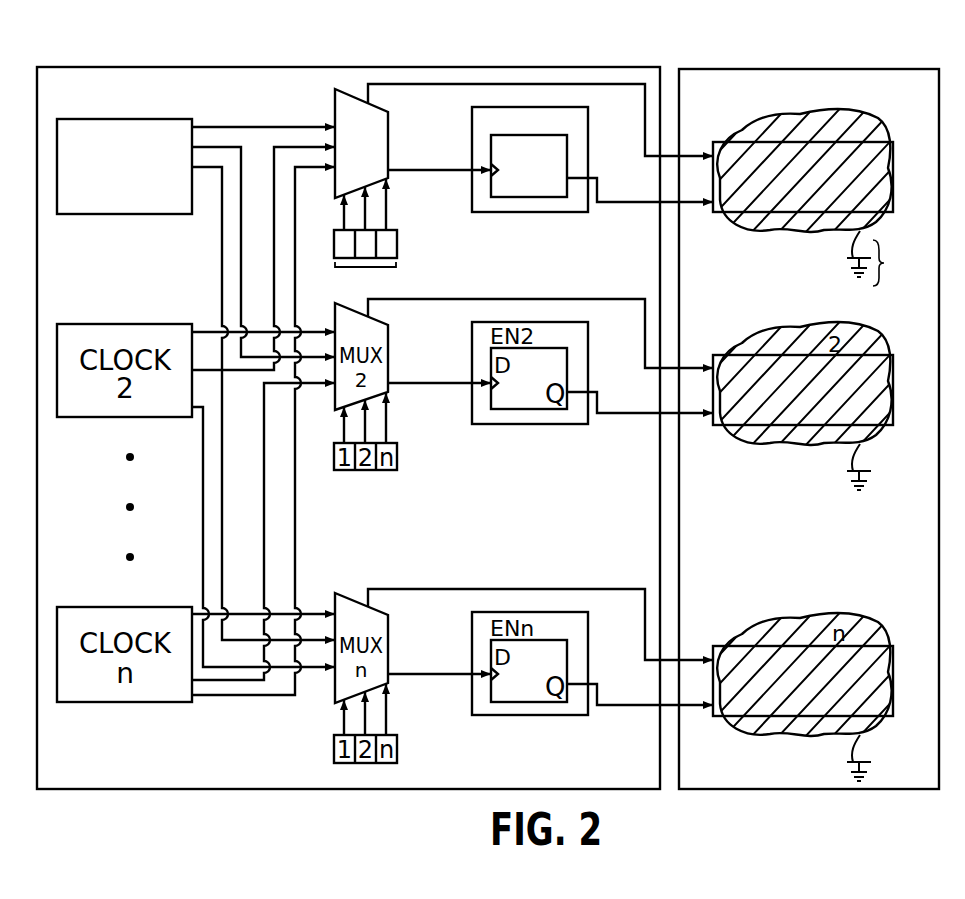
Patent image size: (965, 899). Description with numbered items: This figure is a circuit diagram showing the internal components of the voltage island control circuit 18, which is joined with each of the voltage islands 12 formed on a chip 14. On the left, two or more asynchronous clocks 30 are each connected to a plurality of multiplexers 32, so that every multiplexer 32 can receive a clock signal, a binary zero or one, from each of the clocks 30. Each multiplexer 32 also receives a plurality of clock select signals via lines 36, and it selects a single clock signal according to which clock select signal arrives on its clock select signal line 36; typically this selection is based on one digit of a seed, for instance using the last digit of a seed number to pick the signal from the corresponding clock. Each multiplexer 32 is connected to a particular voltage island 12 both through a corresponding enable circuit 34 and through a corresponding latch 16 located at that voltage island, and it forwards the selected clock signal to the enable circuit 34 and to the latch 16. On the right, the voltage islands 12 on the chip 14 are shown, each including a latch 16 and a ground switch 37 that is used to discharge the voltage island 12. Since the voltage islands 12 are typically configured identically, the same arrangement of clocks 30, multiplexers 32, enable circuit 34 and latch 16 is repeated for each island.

The voltage island control circuit 18 is at (370, 67).
The chip 14 is at (909, 69).
The asynchronous clocks 30 is at (108, 119).
The multiplexers 32 is at (390, 127).
The enable circuit 34 is at (588, 147).
The clock select signal lines 36 is at (365, 238).
The voltage islands 12 is at (756, 127).
The latches 16 is at (893, 158).
The ground switch 37 is at (885, 263).